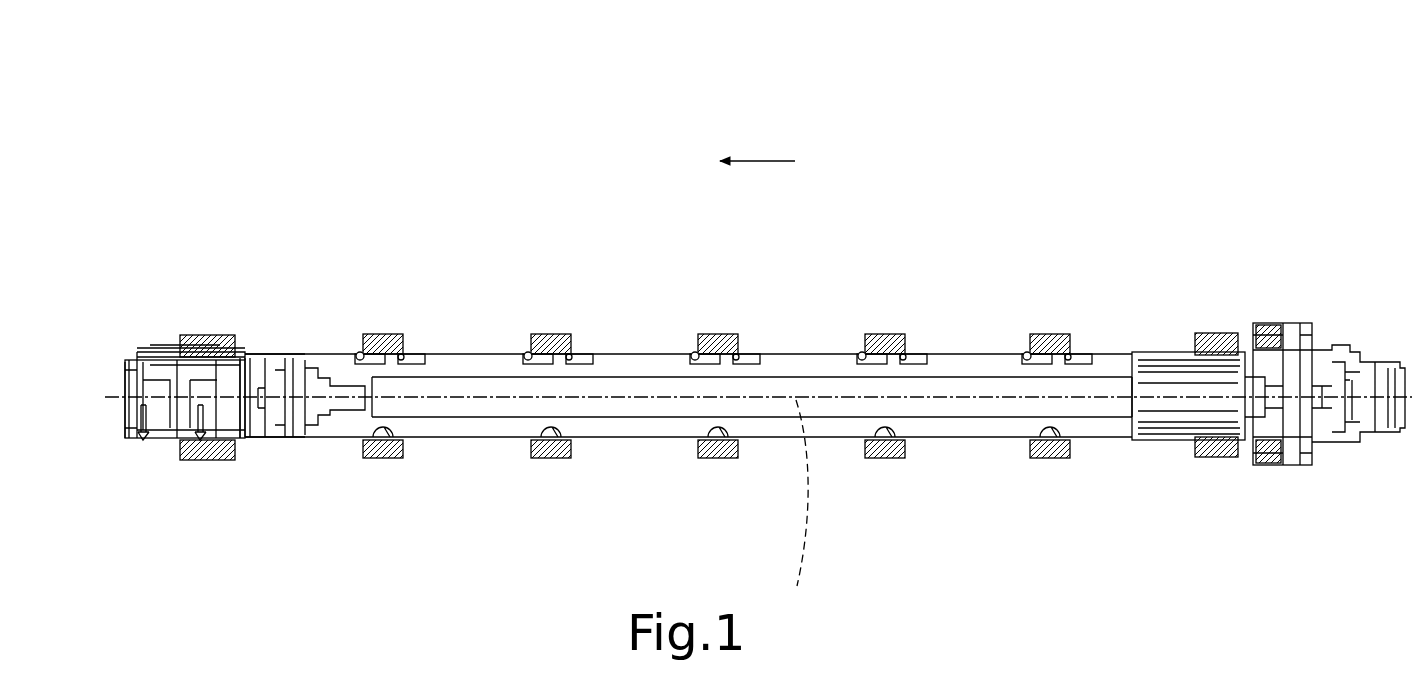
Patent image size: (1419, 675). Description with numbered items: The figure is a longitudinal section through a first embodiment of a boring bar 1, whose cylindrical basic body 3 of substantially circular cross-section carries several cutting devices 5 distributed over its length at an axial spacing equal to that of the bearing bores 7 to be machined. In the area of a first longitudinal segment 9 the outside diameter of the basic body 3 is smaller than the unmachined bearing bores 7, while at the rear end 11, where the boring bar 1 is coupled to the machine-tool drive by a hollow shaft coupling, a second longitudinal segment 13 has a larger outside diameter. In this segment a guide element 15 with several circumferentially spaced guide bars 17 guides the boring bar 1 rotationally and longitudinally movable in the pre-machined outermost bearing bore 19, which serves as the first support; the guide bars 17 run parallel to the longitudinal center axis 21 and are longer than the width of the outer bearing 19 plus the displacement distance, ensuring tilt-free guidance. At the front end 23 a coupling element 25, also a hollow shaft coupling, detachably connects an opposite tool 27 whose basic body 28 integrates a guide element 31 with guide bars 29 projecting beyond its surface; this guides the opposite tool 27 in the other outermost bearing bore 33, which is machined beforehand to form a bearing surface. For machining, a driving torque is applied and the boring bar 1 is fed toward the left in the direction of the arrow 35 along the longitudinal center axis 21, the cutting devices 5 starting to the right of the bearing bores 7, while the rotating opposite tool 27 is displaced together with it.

The boring bar 1 is at (398, 183).
The basic body 3 is at (626, 356).
The cutting devices 5 is at (356, 348).
The bearing bores 7 is at (395, 460).
The first longitudinal segment 9 is at (628, 440).
The rear end 11 is at (1220, 226).
The second longitudinal segment 13 is at (1157, 442).
The guide element 15 is at (1178, 450).
The guide bars 17 is at (1197, 430).
The outermost bearing bore 19 is at (1205, 457).
The longitudinal center axis 21 is at (758, 503).
The front end 23 is at (288, 290).
The coupling element 25 is at (285, 450).
The opposite tool 27 is at (158, 342).
The basic body 28 is at (244, 448).
The guide bars 29 is at (167, 445).
The guide element 31 is at (122, 449).
The bearing bore 33 is at (207, 462).
The arrow 35 is at (760, 160).